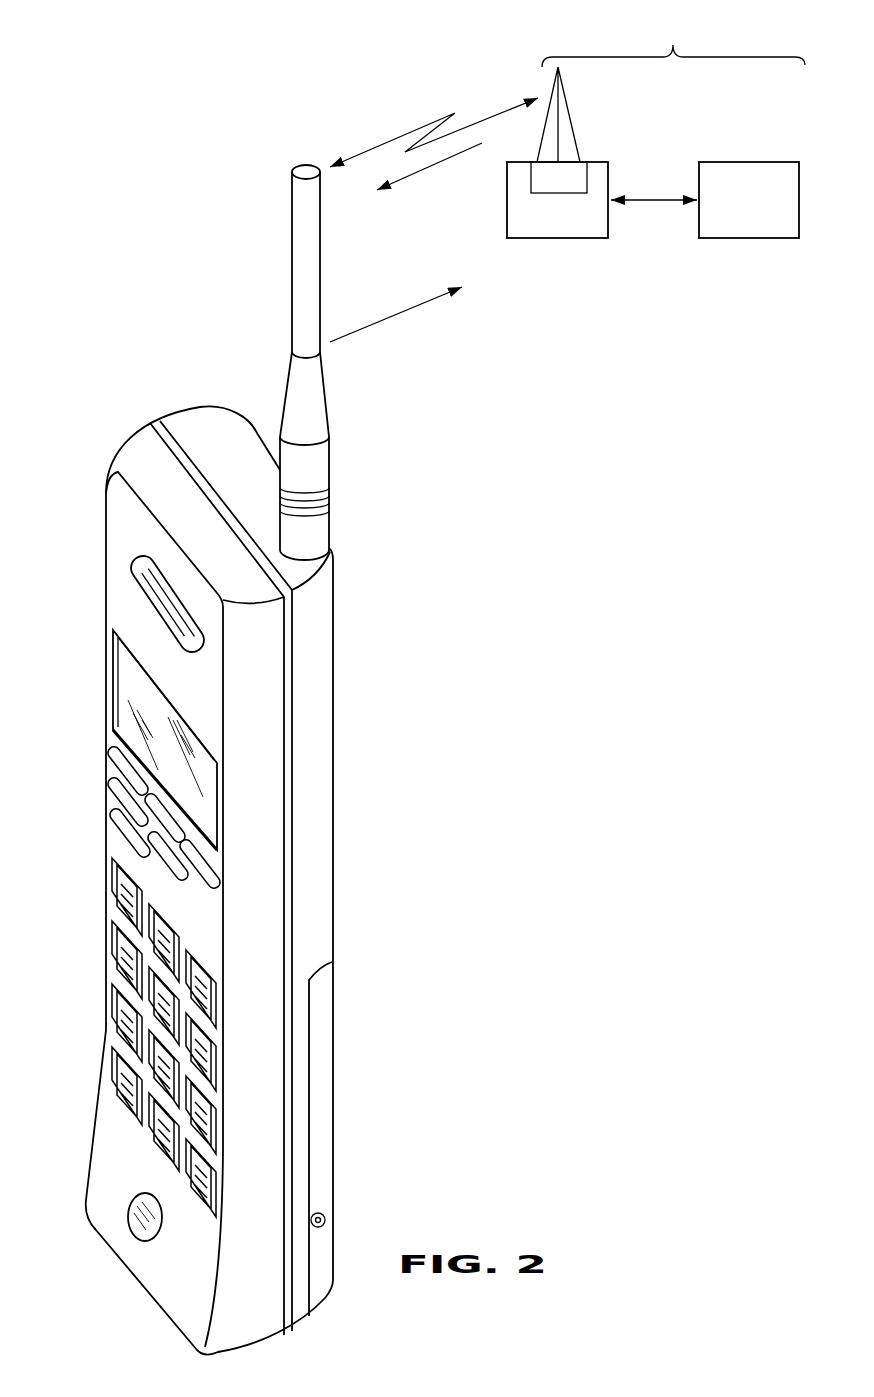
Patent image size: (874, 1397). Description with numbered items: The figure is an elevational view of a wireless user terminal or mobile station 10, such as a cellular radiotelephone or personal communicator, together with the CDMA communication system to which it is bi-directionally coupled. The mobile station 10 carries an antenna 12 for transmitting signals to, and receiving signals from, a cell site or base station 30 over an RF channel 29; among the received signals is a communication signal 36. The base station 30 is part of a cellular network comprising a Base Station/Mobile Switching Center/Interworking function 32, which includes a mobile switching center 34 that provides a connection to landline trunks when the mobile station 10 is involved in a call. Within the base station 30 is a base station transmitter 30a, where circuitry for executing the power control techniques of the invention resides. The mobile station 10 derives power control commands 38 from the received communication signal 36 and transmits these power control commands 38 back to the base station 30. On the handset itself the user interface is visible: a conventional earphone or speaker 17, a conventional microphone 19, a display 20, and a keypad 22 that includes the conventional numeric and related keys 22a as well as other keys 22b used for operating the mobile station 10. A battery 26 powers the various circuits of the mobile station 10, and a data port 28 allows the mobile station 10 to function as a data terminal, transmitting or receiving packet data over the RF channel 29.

The mobile station 10 is at (80, 414).
The antenna 12 is at (298, 247).
The speaker 17 is at (152, 582).
The microphone 19 is at (137, 1232).
The display 20 is at (127, 700).
The keypad 22 is at (218, 1045).
The numeric and related keys 22a is at (108, 1045).
The other keys 22b is at (163, 818).
The battery 26 is at (327, 1110).
The data port 28 is at (325, 1215).
The RF channel 29 is at (485, 118).
The base station 30 is at (563, 239).
The base station transmitter 30a is at (580, 160).
The Base Station/Mobile Switching Center/Interworking function 32 is at (673, 39).
The mobile switching center 34 is at (728, 162).
The communication signal 36 is at (447, 162).
The power control commands 38 is at (412, 307).